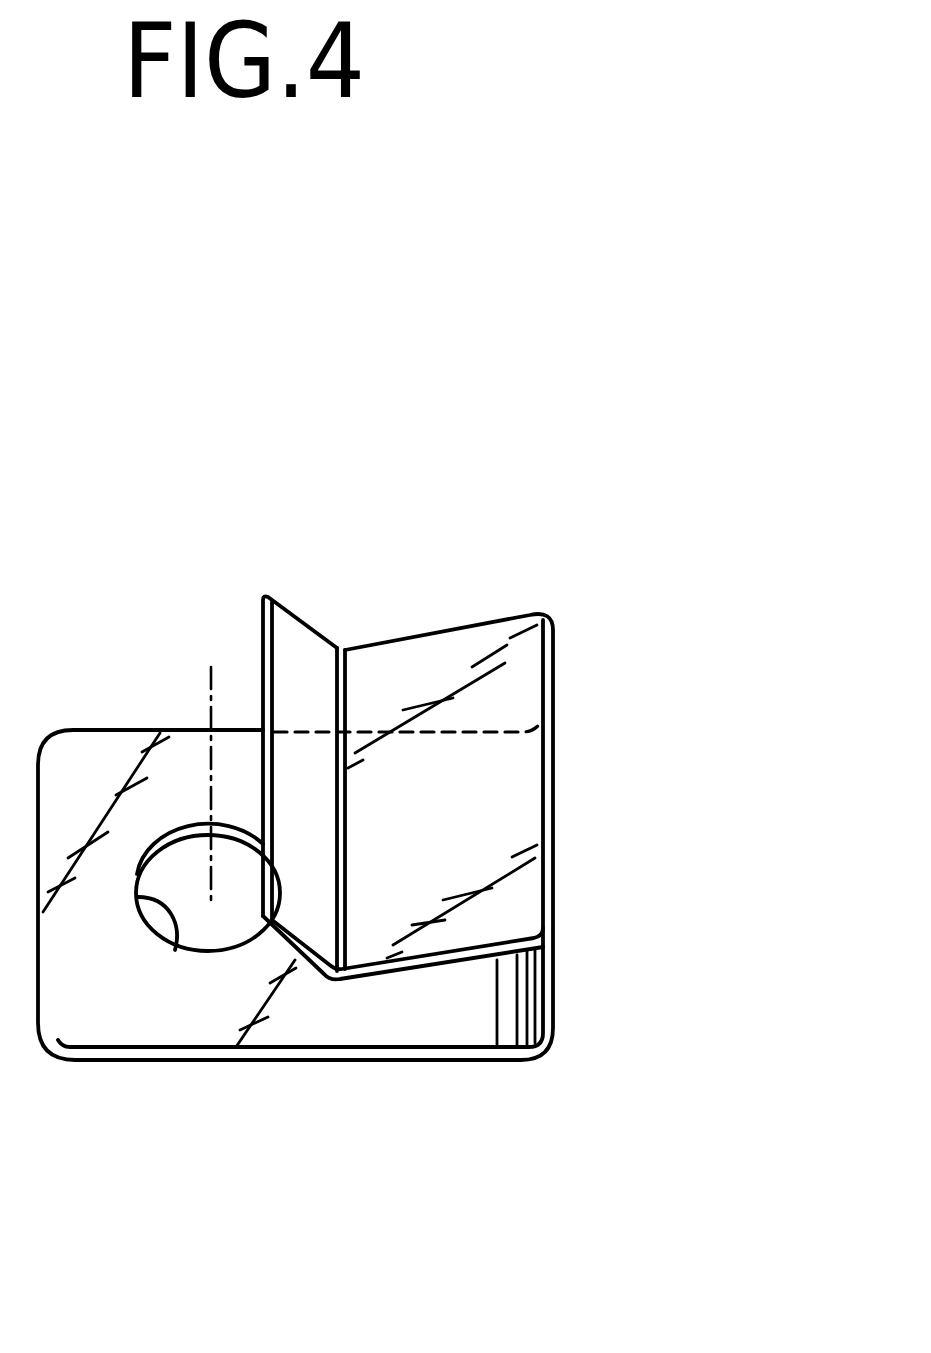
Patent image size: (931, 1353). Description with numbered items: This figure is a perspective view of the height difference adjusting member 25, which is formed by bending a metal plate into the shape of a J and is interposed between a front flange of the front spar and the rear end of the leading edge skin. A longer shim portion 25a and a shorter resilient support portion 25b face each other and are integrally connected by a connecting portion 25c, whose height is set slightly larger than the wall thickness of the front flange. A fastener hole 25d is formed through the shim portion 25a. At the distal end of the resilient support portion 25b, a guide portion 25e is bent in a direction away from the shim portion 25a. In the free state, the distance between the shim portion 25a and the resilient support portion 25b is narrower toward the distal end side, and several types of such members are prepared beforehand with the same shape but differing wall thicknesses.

The height difference adjusting member 25 is at (600, 738).
The shim portion 25a is at (335, 1020).
The resilient support portion 25b is at (433, 652).
The connecting portion 25c is at (555, 992).
The fastener hole 25d is at (175, 950).
The guide portion 25e is at (300, 637).